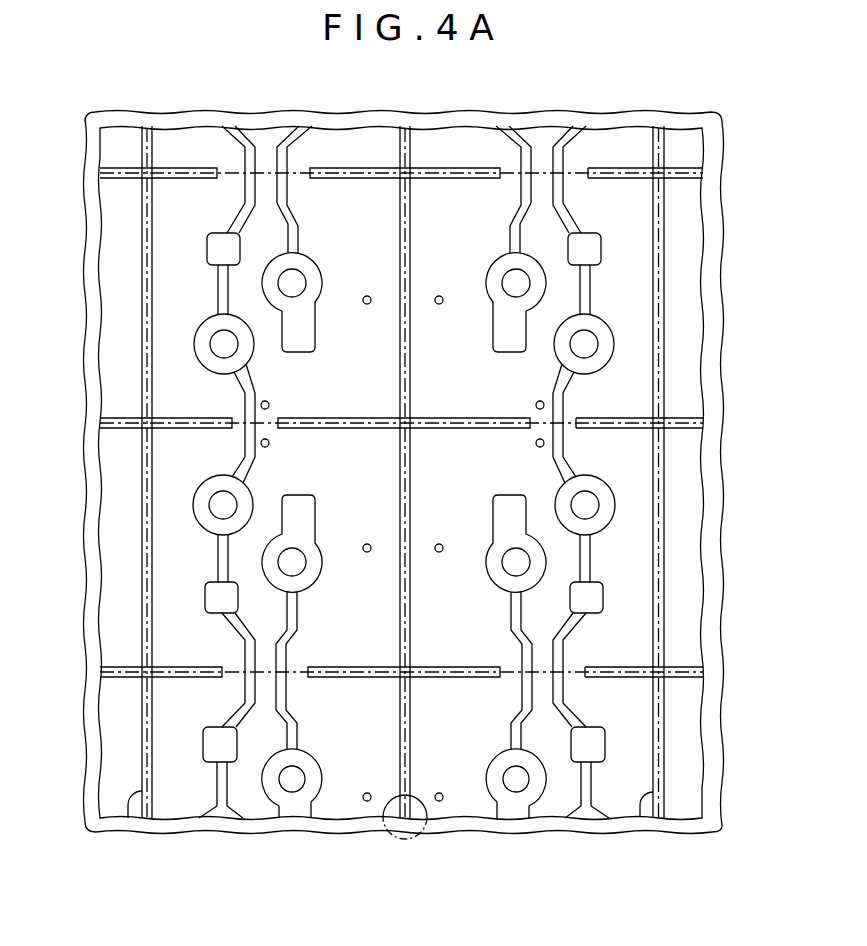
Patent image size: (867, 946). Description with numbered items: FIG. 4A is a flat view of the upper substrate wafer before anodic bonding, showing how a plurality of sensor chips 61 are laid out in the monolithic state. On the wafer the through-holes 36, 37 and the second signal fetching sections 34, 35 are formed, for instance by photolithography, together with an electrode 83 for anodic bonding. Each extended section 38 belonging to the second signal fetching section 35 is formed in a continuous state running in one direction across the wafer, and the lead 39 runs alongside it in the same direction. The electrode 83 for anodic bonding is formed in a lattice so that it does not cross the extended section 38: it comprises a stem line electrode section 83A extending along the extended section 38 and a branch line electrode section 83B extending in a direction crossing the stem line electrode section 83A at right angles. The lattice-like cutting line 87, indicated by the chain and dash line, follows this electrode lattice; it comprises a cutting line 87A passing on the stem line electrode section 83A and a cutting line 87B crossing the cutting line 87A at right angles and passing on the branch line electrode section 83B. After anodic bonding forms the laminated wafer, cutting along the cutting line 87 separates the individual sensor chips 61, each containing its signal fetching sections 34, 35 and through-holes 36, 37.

The second signal fetching section 34 is at (311, 274).
The second signal fetching section 35 is at (214, 326).
The through-hole 36 is at (300, 290).
The through-hole 37 is at (220, 342).
The extended section 38 is at (245, 170).
The lead 39 is at (287, 170).
The sensor chip 61 is at (180, 249).
The electrode for anodic bonding 83 is at (142, 149).
The stem line electrode section 83A is at (153, 142).
The branch line electrode section 83B is at (202, 180).
The cutting line 87 is at (427, 838).
The cutting line 87A is at (128, 825).
The cutting line 87B is at (437, 178).